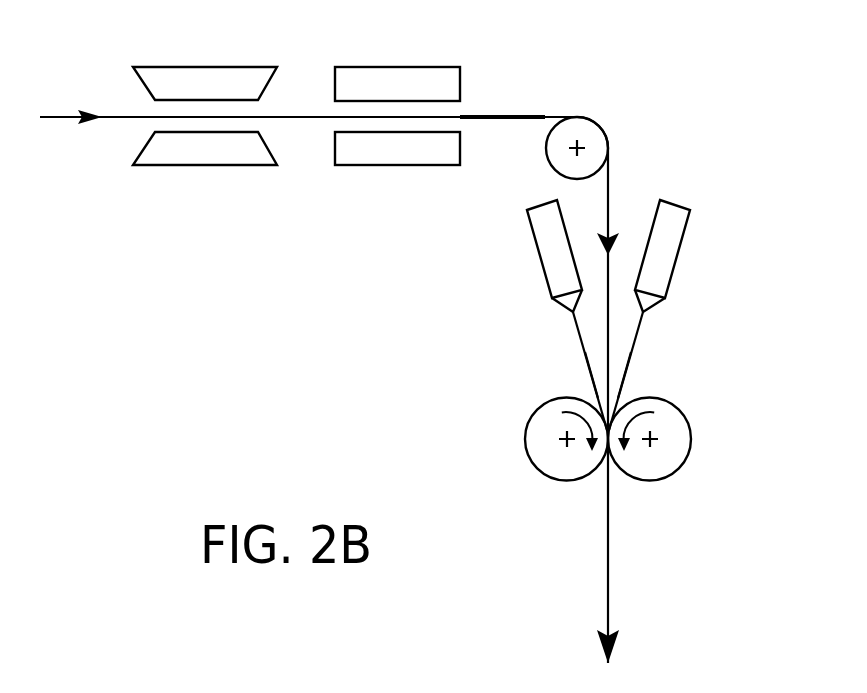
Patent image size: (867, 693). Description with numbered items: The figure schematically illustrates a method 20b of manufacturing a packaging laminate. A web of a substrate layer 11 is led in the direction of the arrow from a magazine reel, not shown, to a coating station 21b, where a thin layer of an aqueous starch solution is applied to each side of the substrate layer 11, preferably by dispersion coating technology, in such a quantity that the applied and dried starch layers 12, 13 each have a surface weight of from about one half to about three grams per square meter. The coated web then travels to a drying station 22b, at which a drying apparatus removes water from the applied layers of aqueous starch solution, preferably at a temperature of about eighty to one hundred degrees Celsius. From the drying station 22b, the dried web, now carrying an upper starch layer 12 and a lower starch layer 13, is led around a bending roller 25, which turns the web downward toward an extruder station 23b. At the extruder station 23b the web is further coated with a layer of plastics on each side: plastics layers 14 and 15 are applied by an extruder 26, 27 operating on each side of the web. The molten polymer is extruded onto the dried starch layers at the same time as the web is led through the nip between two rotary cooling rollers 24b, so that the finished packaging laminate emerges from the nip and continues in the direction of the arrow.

The substrate layer 11 is at (325, 372).
The coating station 21b is at (205, 97).
The drying station 22b is at (397, 97).
The upper starch layer 12 is at (502, 95).
The lower starch layer 13 is at (502, 139).
The bending roller 25 is at (595, 132).
The method of manufacturing 20b is at (416, 346).
The extruder 27 is at (548, 252).
The extruder 26 is at (667, 252).
The extruder station 23b is at (631, 349).
The plastics layer 15 is at (553, 372).
The plastics layer 14 is at (661, 372).
The rotary cooling rollers 24b is at (667, 460).